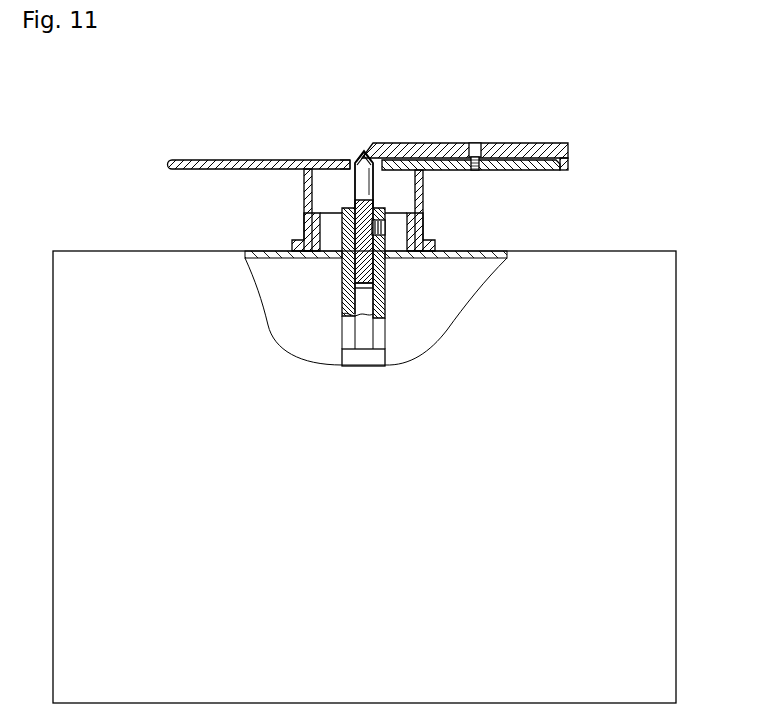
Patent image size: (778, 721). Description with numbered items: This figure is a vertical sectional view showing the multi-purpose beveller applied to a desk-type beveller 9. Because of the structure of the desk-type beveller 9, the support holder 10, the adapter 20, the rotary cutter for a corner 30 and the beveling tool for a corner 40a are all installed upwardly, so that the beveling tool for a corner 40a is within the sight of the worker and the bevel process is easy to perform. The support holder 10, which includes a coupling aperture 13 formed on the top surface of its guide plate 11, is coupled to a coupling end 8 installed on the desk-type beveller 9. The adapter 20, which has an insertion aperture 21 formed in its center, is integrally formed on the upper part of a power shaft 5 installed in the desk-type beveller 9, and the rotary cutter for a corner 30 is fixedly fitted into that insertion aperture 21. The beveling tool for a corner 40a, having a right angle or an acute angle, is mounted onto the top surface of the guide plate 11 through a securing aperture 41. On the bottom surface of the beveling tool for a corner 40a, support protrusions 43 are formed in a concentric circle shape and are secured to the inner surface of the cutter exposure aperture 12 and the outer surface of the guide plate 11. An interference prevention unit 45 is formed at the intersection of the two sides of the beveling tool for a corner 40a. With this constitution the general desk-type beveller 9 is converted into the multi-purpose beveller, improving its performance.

The power shaft 5 is at (362, 360).
The coupling end 8 is at (303, 228).
The desk-type beveller 9 is at (95, 277).
The support holder 10 is at (303, 188).
The guide plate 11 is at (174, 160).
The cutter exposure aperture 12 is at (344, 160).
The coupling aperture 13 is at (481, 166).
The adapter 20 is at (350, 330).
The insertion aperture 21 is at (374, 262).
The rotary cutter for a corner 30 is at (356, 160).
The beveling tool for a corner 40a is at (520, 145).
The securing aperture 41 is at (475, 145).
The support protrusions 43 is at (566, 170).
The interference prevention unit 45 is at (367, 152).